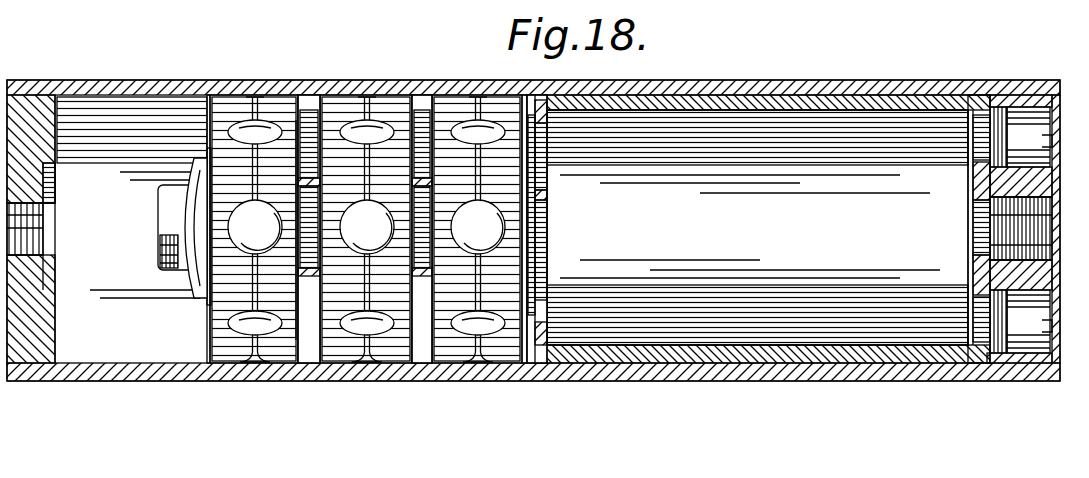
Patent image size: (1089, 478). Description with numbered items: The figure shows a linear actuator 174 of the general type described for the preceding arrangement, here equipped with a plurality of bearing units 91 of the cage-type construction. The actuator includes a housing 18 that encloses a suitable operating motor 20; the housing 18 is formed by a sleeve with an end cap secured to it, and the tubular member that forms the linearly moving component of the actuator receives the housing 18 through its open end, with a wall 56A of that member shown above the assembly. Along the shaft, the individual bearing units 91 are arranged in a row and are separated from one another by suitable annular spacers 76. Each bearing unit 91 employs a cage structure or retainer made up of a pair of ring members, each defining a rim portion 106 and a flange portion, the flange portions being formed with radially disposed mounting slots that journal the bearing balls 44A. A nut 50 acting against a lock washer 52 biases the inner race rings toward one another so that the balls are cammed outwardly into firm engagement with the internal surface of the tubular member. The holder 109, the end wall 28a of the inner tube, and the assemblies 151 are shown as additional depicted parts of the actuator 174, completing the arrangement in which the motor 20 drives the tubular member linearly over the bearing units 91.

The housing 18 is at (873, 412).
The operating motor 20 is at (765, 422).
The inner tube end wall 28a is at (537, 223).
The bearing balls 44A is at (230, 170).
The nut 50 is at (191, 167).
The lock washer 52 is at (210, 300).
The housing top wall 56A is at (817, 88).
The annular spacers 76 is at (308, 170).
The bearing unit 91 is at (289, 90).
The rim portion 106 is at (221, 309).
The lens holder 109 is at (280, 297).
The lens assembly 151 is at (346, 180).
The linear actuator 174 is at (997, 69).